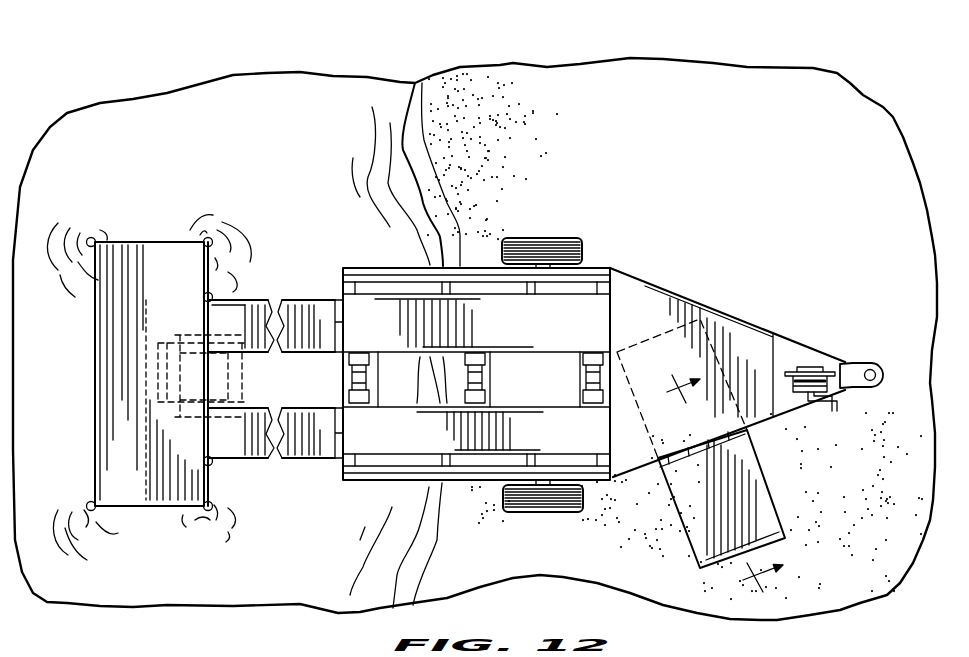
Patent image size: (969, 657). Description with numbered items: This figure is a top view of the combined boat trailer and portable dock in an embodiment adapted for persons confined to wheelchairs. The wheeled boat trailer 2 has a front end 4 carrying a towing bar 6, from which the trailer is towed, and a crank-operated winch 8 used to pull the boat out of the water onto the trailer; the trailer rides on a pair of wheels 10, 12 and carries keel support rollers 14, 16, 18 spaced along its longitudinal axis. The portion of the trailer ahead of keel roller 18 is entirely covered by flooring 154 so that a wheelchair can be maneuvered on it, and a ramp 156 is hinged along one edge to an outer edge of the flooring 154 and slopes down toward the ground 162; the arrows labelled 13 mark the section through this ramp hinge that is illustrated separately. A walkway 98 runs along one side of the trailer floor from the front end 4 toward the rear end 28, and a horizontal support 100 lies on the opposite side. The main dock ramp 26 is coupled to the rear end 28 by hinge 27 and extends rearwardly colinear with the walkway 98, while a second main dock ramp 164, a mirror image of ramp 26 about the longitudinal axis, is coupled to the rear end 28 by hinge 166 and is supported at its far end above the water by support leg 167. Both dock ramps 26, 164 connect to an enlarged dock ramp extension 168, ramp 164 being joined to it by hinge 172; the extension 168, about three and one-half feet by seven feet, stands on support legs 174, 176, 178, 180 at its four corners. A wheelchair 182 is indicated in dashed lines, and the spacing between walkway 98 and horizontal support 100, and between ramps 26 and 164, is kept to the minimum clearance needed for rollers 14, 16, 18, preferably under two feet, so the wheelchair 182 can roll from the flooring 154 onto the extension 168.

The wheeled boat trailer 2 is at (612, 263).
The front end 4 is at (815, 346).
The towing bar 6 is at (863, 366).
The crank-operated winch 8 is at (810, 367).
The wheel 10 is at (557, 512).
The wheel 12 is at (577, 238).
The section line 13 is at (711, 486).
The roller 14 is at (366, 380).
The roller 16 is at (482, 380).
The roller 18 is at (586, 380).
The main dock ramp 26 is at (258, 299).
The hinge 27 is at (336, 300).
The rear end 28 is at (338, 384).
The walkway 98 is at (560, 332).
The horizontal support 100 is at (567, 442).
The flooring 154 is at (757, 337).
The ramp 156 is at (650, 337).
The ground 162 is at (881, 555).
The second main dock ramp 164 is at (257, 462).
The hinge 166 is at (335, 460).
The support leg 167 is at (213, 467).
The dock ramp extension 168 is at (150, 242).
The hinge 172 is at (200, 440).
The support leg 174 is at (213, 237).
The support leg 176 is at (208, 525).
The support leg 178 is at (93, 238).
The support leg 180 is at (92, 502).
The wheelchair 182 is at (150, 375).